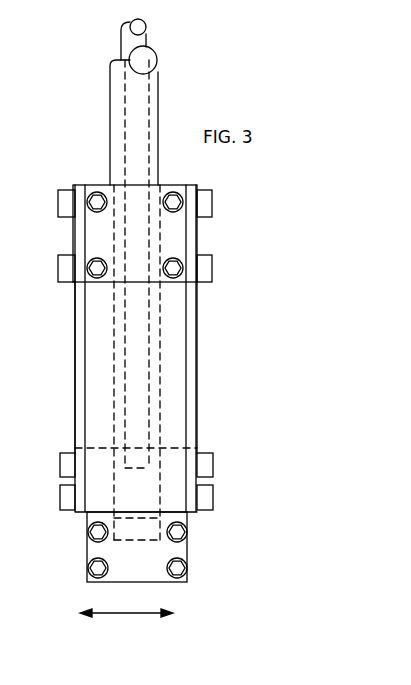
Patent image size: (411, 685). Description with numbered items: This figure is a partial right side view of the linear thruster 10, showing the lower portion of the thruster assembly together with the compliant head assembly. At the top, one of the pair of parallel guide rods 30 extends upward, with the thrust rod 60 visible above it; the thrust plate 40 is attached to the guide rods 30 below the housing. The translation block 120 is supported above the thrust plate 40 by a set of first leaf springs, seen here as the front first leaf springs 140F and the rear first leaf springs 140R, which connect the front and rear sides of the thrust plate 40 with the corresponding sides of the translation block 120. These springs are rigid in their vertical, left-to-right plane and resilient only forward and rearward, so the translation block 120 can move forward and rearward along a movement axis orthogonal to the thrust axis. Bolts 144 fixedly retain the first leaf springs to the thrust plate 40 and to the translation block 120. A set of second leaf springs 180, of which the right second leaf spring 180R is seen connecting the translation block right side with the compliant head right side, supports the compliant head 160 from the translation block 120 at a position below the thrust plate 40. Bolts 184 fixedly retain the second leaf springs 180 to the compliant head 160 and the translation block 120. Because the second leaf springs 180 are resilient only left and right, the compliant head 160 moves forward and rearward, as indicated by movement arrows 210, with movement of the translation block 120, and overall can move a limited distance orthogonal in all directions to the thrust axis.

The linear thruster 10 is at (3, 112).
The guide rods 30 is at (158, 95).
The thrust plate 40 is at (231, 482).
The thrust rod 60 is at (147, 30).
The translation block 120 is at (228, 224).
The front first leaf springs 140F is at (75, 360).
The rear first leaf springs 140R is at (197, 342).
The bolts 144 is at (58, 204).
The compliant head 160 is at (221, 566).
The second leaf springs 180 is at (173, 385).
The right second leaf spring 180R is at (100, 387).
The bolts 184 is at (187, 538).
The movement arrows 210 is at (143, 606).